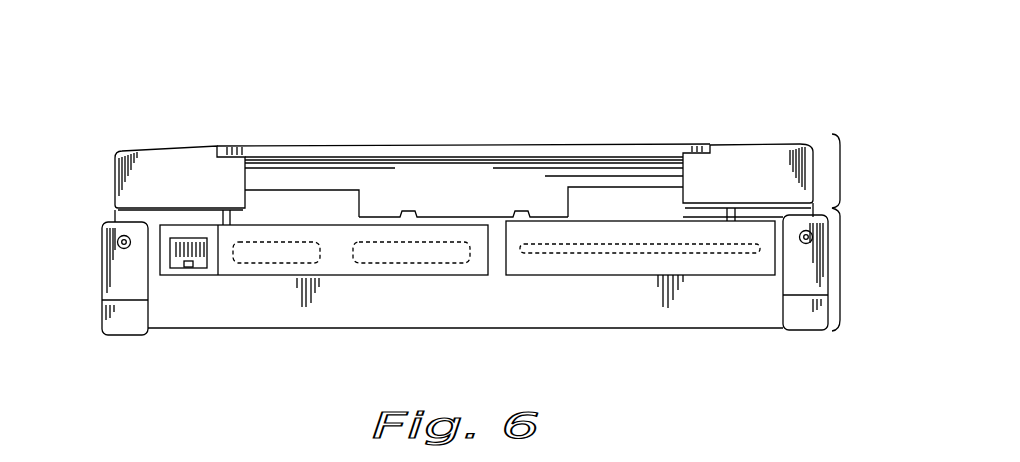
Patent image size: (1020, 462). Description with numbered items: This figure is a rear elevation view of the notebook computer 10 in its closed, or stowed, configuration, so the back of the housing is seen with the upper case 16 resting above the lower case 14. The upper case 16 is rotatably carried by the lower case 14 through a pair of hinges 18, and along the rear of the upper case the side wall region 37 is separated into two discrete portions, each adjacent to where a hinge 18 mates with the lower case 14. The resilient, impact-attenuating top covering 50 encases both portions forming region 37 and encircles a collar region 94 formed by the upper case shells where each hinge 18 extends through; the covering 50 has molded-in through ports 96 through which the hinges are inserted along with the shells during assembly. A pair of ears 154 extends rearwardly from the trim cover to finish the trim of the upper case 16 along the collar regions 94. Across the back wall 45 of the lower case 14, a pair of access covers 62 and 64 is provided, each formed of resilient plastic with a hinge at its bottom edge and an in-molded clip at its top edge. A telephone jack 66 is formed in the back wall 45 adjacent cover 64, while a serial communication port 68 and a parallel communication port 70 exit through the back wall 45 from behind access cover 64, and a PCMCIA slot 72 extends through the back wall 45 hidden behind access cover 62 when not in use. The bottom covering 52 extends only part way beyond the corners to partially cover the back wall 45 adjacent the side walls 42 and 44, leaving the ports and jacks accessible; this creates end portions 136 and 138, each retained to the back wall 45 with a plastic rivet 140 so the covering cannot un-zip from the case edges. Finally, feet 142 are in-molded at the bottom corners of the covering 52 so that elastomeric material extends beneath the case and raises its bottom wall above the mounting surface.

The notebook computer 10 is at (455, 92).
The lower case 14 is at (842, 272).
The upper case 16 is at (842, 168).
The hinge 18 is at (249, 176).
The side wall region 37 is at (195, 189).
The side wall 42 is at (90, 297).
The side wall 44 is at (852, 233).
The back wall 45 is at (491, 312).
The top covering 50 is at (112, 182).
The bottom covering 52 is at (100, 273).
The access cover 62 is at (623, 268).
The access cover 64 is at (327, 267).
The telephone jack 66 is at (174, 270).
The serial communication port 68 is at (282, 250).
The parallel communication port 70 is at (430, 253).
The PCMCIA slot 72 is at (590, 250).
The collar region 94 is at (232, 182).
The through port 96 is at (245, 200).
The end portion 136 is at (807, 320).
The end portion 138 is at (128, 330).
The plastic rivet 140 is at (119, 238).
The foot 142 is at (133, 337).
The ear 154 is at (230, 150).